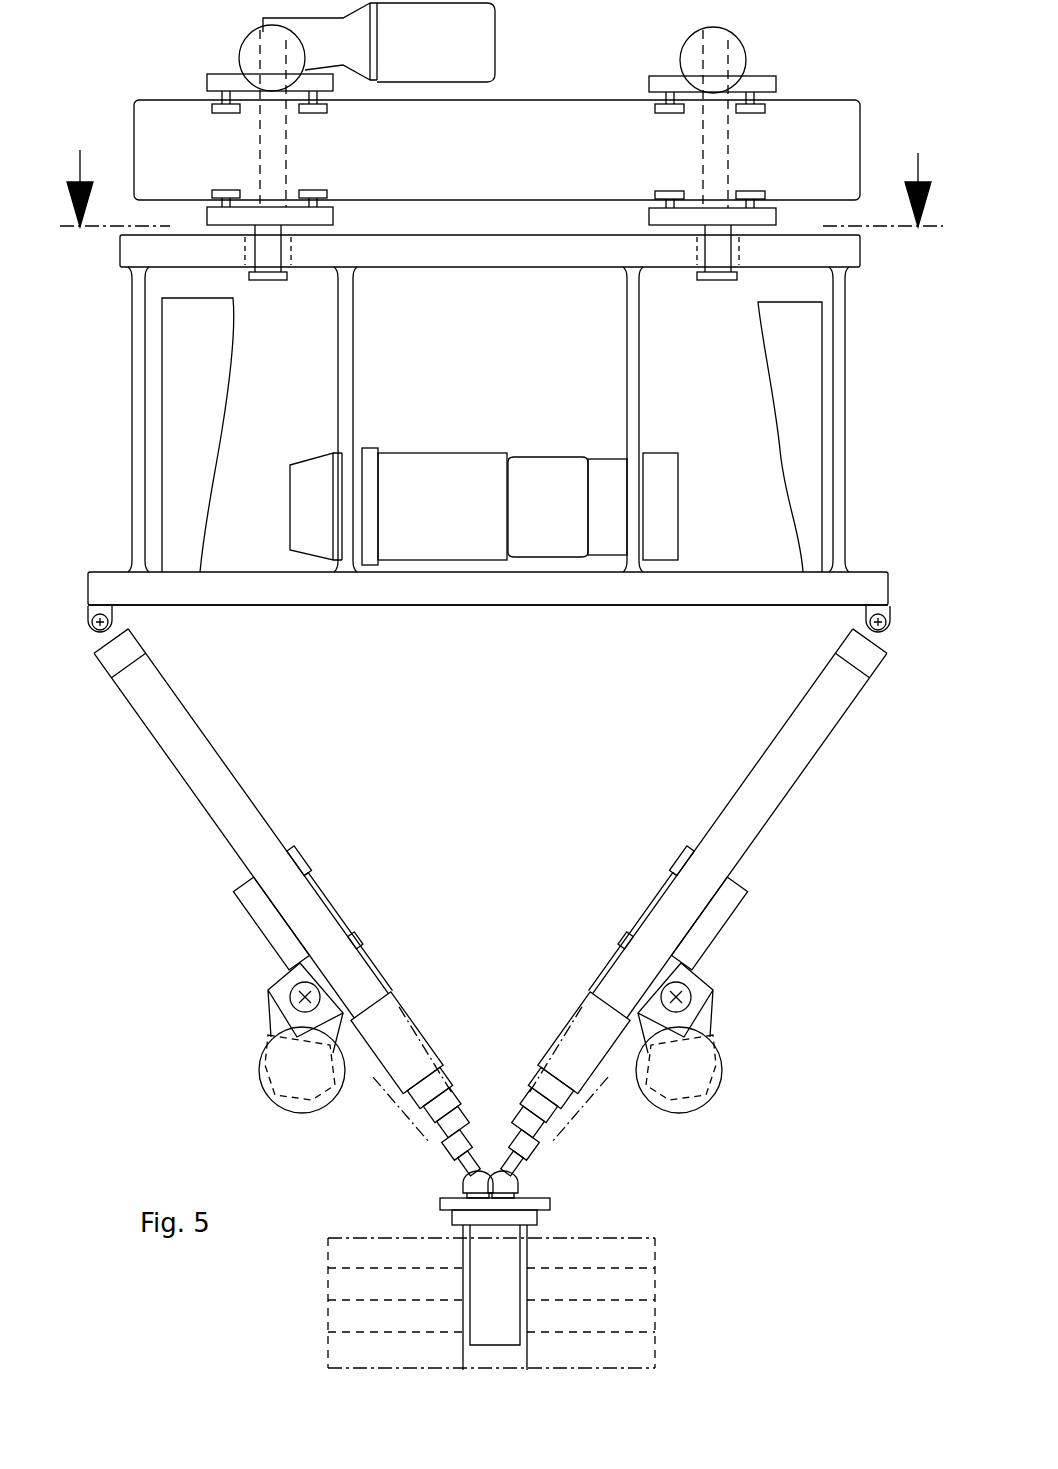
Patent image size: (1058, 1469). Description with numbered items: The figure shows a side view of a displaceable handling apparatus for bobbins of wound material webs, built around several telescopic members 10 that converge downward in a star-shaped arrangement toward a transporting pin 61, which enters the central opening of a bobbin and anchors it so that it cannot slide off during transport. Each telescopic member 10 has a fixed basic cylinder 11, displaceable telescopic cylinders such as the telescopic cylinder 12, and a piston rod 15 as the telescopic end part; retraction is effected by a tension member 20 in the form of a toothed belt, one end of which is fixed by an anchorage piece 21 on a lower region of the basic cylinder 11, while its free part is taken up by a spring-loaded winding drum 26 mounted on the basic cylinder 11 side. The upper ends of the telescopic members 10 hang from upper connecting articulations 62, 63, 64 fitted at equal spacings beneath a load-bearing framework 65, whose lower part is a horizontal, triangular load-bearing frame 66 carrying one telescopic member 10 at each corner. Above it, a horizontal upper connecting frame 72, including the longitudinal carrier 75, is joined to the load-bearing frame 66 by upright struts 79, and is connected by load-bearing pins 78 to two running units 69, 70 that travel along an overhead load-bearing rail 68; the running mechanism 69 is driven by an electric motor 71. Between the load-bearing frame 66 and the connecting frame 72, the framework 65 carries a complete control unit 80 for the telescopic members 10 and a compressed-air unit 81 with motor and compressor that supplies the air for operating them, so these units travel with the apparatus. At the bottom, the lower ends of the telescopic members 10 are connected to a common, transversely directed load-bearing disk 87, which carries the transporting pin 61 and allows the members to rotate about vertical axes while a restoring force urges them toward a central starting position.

The telescopic member 10 is at (490, 913).
The basic cylinder 11 is at (187, 757).
The telescopic cylinder 12 is at (413, 1062).
The piston rod 15 is at (448, 1143).
The tension member 20 is at (397, 995).
The anchorage piece 21 is at (335, 912).
The winding drum 26 is at (267, 1100).
The transporting pin 61 is at (497, 1285).
The upper connecting articulation 62 is at (115, 614).
The upper connecting articulation 63 is at (803, 640).
The upper connecting articulation 64 is at (868, 616).
The load-bearing framework 65 is at (551, 435).
The load-bearing frame 66 is at (617, 607).
The load-bearing rail 68 is at (577, 97).
The running mechanism 69 is at (210, 153).
The running unit 70 is at (775, 74).
The electric motor 71 is at (462, 48).
The upper connecting frame 72 is at (864, 260).
The longitudinal carrier 75 is at (484, 588).
The load-bearing pin 78 is at (268, 228).
The upright strut 79 is at (133, 448).
The control unit 80 is at (798, 473).
The compressed-air unit 81 is at (480, 452).
The load-bearing disk 87 is at (533, 1203).